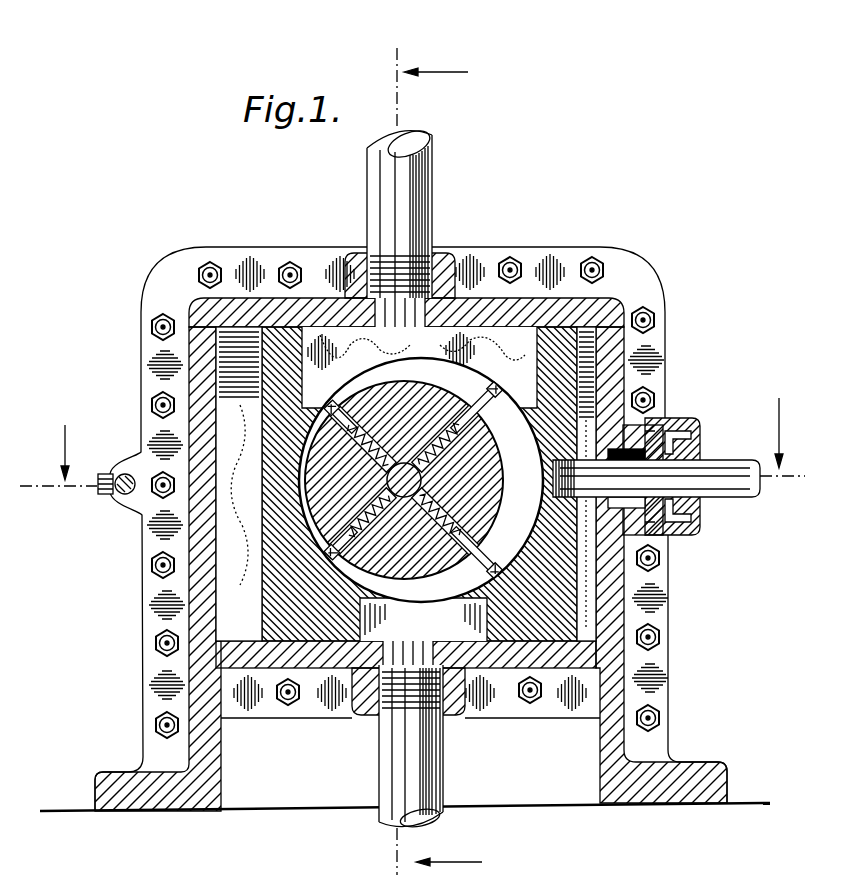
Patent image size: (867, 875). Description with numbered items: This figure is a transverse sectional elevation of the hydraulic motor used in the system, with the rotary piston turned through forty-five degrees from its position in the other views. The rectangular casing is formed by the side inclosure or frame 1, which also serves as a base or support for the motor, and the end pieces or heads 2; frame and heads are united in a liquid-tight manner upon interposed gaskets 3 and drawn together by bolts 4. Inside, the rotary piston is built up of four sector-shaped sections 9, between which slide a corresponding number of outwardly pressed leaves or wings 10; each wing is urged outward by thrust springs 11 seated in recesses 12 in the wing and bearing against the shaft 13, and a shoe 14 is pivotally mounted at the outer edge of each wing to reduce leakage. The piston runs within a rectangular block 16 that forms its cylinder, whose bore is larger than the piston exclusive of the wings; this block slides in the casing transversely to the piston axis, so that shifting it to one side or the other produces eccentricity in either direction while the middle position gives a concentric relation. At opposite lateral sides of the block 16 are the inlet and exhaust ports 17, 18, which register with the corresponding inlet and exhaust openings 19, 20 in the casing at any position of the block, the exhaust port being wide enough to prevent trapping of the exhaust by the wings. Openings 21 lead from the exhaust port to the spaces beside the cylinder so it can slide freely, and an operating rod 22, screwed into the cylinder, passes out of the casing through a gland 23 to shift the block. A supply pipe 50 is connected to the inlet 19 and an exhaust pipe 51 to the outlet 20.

The side inclosure or frame 1 is at (523, 297).
The end pieces or heads 2 is at (412, 450).
The gaskets 3 is at (436, 461).
The bolts 4 is at (601, 272).
The sector-shaped sections 9 is at (335, 487).
The leaves or wings 10 is at (420, 484).
The thrust springs 11 is at (436, 471).
The recesses 12 is at (427, 476).
The shaft 13 is at (421, 477).
The shoe 14 is at (388, 366).
The rectangular block 16 is at (292, 462).
The inlet port 17 is at (423, 619).
The exhaust port 18 is at (482, 348).
The inlet opening 19 is at (458, 618).
The exhaust opening 20 is at (419, 367).
The openings 21 is at (260, 348).
The operating rod 22 is at (717, 493).
The gland 23 is at (684, 540).
The supply pipe 50 is at (390, 750).
The exhaust pipe 51 is at (433, 205).